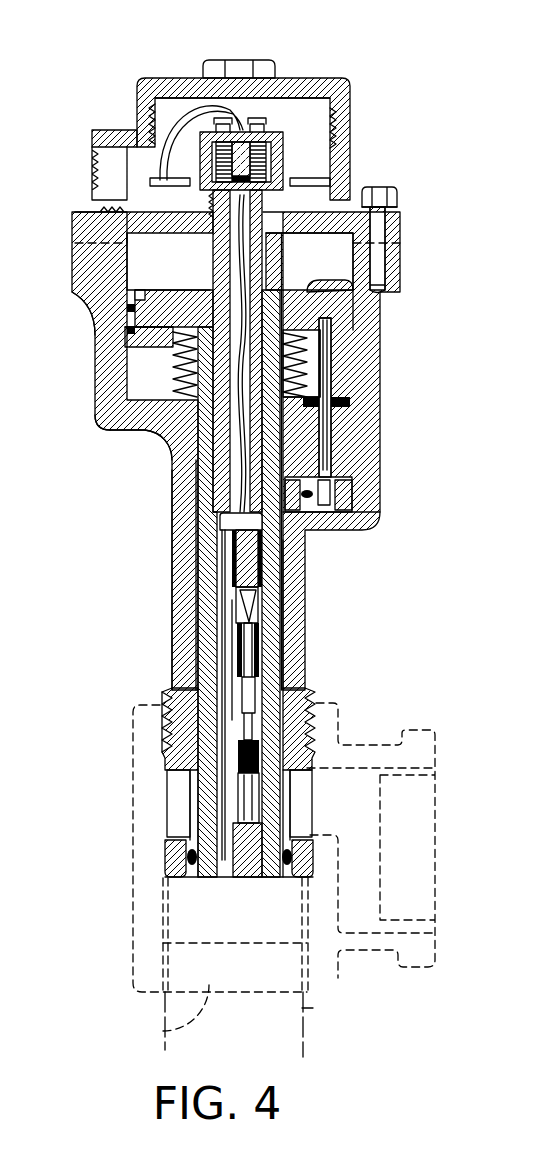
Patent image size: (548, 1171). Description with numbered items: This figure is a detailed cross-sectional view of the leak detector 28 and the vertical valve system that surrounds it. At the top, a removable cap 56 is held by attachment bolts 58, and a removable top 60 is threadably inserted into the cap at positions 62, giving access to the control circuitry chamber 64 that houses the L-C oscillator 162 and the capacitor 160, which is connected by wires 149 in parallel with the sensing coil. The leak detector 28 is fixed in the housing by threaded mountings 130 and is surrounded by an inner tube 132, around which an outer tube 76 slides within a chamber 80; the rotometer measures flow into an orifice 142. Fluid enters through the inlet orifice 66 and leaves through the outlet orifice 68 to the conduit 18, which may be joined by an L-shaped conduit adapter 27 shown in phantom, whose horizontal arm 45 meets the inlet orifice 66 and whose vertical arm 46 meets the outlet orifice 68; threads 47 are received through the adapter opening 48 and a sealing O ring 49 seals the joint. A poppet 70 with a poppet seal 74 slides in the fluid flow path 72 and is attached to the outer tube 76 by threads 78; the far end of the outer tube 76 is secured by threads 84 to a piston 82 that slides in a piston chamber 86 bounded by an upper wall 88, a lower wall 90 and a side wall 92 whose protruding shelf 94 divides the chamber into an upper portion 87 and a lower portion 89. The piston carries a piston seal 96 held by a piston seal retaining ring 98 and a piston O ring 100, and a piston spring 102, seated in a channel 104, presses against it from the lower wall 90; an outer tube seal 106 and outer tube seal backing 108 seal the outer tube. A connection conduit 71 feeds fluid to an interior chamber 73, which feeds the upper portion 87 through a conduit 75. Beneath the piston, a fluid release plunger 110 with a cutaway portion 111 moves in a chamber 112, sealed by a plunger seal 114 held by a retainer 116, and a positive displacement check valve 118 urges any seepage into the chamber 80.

The conduit 18 is at (310, 1010).
The conduit adapter 27 is at (127, 867).
The leak detector 28 is at (278, 666).
The horizontal arm 45 is at (415, 845).
The vertical arm 46 is at (160, 1033).
The threads 47 is at (160, 722).
The adapter opening 48 is at (163, 705).
The sealing O ring 49 is at (172, 860).
The removable cap 56 is at (350, 145).
The attachment bolts 58 is at (377, 186).
The removable top 60 is at (323, 77).
The threaded positions 62 is at (137, 115).
The leak detector control circuitry chamber 64 is at (304, 108).
The inlet orifice 66 is at (308, 790).
The outlet orifice 68 is at (230, 922).
The poppet 70 is at (197, 782).
The connection conduit 71 is at (215, 530).
The fluid flow path 72 is at (210, 898).
The interior chamber 73 is at (234, 507).
The poppet seal 74 is at (192, 870).
The conduit 75 is at (213, 233).
The outer tube 76 is at (195, 558).
The threads 78 is at (304, 690).
The chamber 80 is at (195, 592).
The piston 82 is at (205, 338).
The threads 84 is at (195, 325).
The piston chamber 86 is at (75, 262).
The upper portion 87 is at (300, 269).
The upper wall 88 is at (88, 212).
The lower portion 89 is at (365, 360).
The lower wall 90 is at (172, 372).
The side wall 92 is at (75, 280).
The protruding shelf 94 is at (130, 340).
The piston seal 96 is at (135, 296).
The piston seal retaining ring 98 is at (127, 298).
The piston O ring 100 is at (175, 292).
The piston spring 102 is at (192, 370).
The channel 104 is at (372, 300).
The outer tube seal 106 is at (192, 448).
The outer tube seal backing 108 is at (190, 432).
The fluid release plunger 110 is at (345, 343).
The cutaway portion 111 is at (333, 438).
The chamber 112 is at (350, 472).
The plunger seal 114 is at (348, 405).
The retainer 116 is at (340, 370).
The positive displacement check valve 118 is at (375, 515).
The threaded mountings 130 is at (400, 228).
The inner tube 132 is at (305, 533).
The orifice 142 is at (297, 780).
The wires 149 is at (250, 478).
The capacitor 160 is at (271, 185).
The L-C oscillator 162 is at (273, 133).